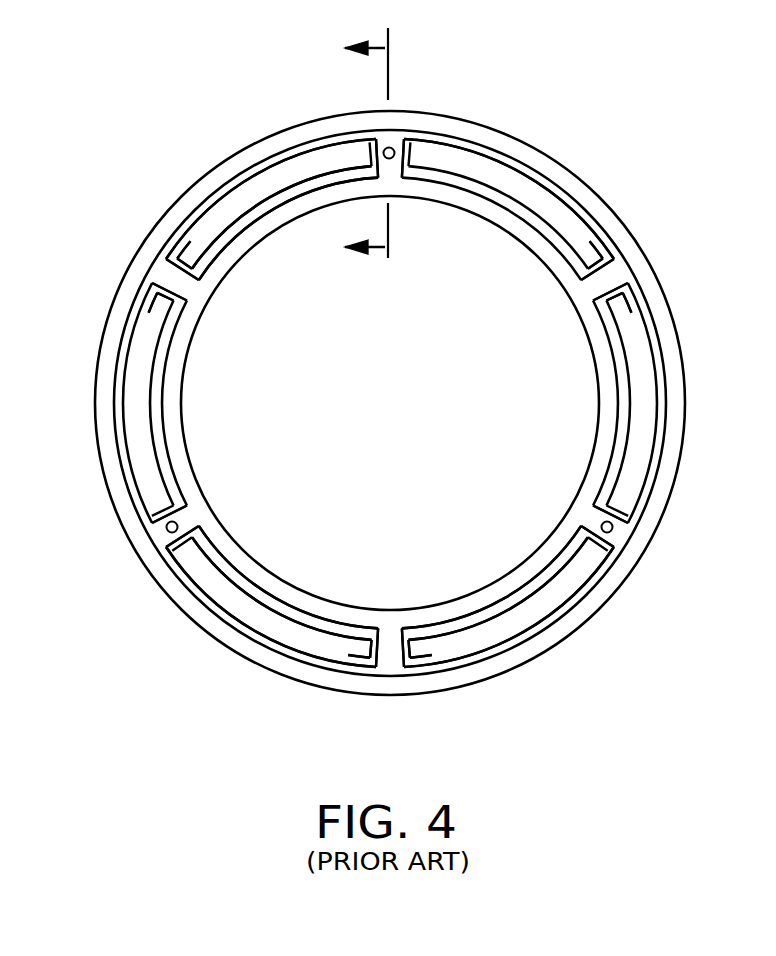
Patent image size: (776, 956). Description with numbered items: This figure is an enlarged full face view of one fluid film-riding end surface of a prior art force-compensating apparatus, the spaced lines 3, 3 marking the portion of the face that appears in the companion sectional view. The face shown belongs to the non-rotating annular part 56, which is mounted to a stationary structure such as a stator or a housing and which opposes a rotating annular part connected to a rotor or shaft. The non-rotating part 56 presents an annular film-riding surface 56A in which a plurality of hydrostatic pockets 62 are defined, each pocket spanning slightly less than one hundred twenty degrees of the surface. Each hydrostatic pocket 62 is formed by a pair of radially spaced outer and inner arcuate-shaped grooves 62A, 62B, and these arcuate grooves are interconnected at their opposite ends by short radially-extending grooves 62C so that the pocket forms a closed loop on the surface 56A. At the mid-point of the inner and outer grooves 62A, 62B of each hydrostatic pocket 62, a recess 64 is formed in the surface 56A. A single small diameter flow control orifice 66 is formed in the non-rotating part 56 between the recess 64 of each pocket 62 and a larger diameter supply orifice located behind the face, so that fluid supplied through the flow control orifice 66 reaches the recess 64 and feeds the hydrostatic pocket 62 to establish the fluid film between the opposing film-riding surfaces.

The spaced lines 3 3 is at (348, 146).
The non-rotating annular part 56 is at (612, 210).
The annular film-riding surface 56A is at (551, 173).
The hydrostatic pocket 62 is at (566, 190).
The outer arcuate-shaped groove 62A is at (290, 152).
The inner arcuate-shaped groove 62B is at (234, 232).
The short radially-extending groove 62C is at (195, 290).
The recess 64 is at (372, 162).
The flow control orifice 66 is at (396, 149).